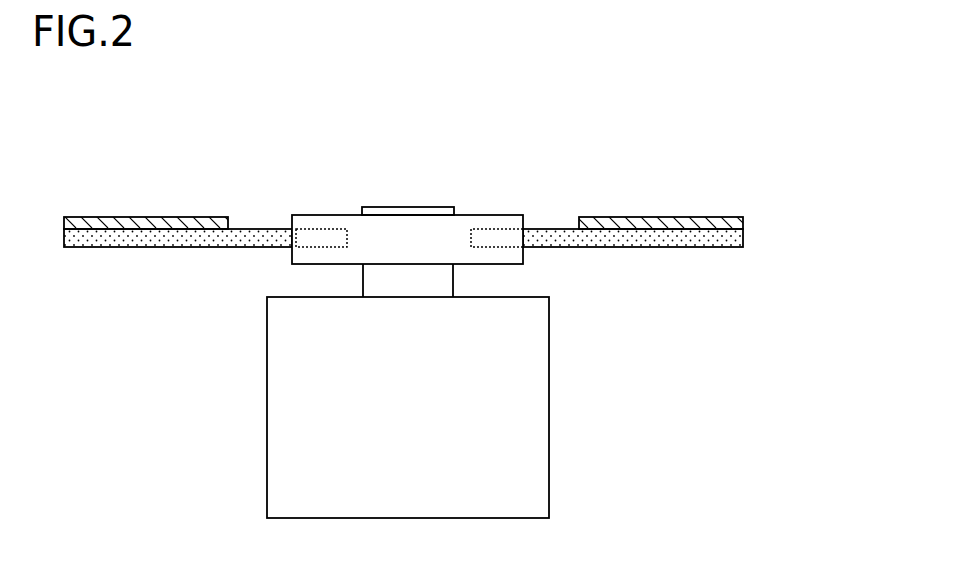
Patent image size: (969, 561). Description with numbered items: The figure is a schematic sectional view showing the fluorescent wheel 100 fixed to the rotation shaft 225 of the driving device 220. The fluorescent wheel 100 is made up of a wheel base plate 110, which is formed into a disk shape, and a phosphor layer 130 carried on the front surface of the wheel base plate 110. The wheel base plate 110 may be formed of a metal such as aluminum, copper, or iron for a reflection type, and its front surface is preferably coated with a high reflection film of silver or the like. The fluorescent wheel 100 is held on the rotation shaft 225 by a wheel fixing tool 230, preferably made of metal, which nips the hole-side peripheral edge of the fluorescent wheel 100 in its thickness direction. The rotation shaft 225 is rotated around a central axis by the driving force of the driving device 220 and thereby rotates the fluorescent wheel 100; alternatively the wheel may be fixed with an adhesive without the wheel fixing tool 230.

The fluorescent wheel 100 is at (790, 233).
The wheel base plate 110 is at (143, 248).
The phosphor layer 130 is at (150, 217).
The driving device 220 is at (550, 415).
The rotation shaft 225 is at (405, 207).
The wheel fixing tool 230 is at (322, 215).